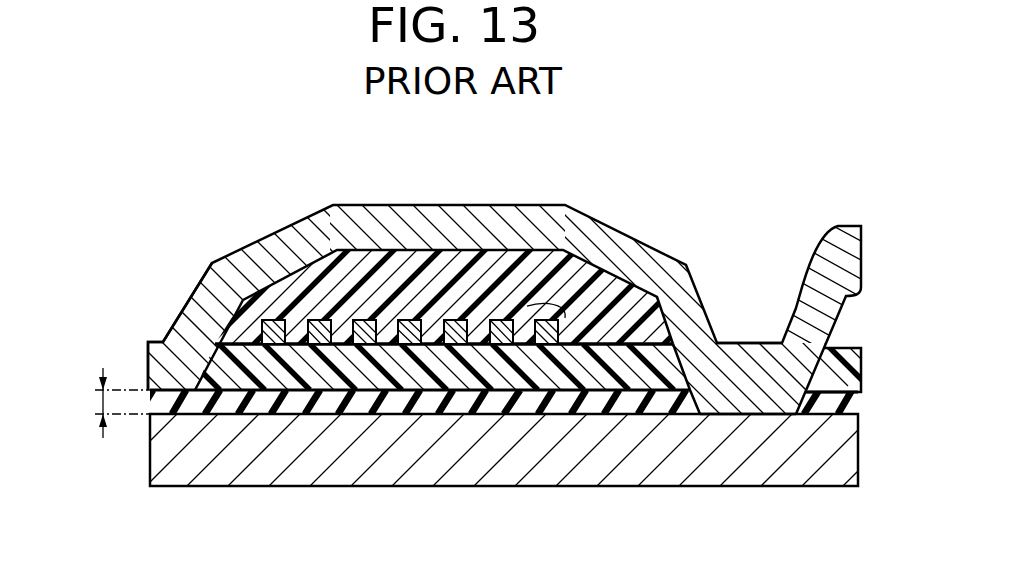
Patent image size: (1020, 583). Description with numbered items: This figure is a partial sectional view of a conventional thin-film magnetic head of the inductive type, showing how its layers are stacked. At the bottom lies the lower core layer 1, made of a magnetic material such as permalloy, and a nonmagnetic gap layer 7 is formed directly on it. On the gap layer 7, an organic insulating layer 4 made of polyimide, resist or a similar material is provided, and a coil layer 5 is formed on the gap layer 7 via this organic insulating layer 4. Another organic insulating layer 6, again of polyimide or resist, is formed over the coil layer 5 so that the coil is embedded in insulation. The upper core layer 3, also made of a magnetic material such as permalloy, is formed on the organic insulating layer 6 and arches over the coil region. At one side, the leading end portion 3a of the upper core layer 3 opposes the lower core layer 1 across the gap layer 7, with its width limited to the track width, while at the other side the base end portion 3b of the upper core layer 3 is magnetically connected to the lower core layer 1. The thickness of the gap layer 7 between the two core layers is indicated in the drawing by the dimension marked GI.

The lower core layer 1 is at (212, 440).
The gap layer 7 is at (408, 400).
The organic insulating layer 4 is at (301, 365).
The coil layer 5 is at (424, 305).
The organic insulating layer 6 is at (497, 270).
The upper core layer 3 is at (620, 262).
The leading end portion 3a is at (163, 372).
The base end portion 3b is at (755, 370).
The gate insulator thickness GI is at (104, 403).